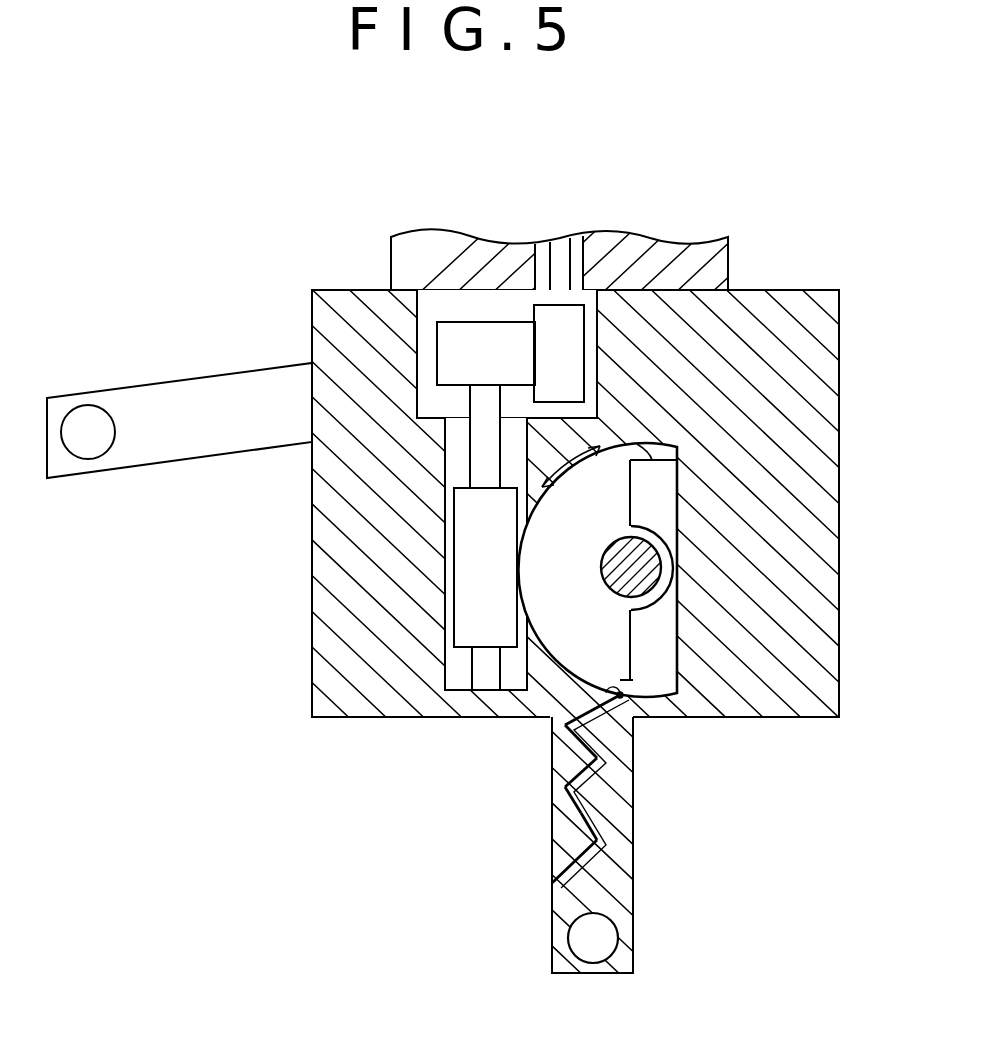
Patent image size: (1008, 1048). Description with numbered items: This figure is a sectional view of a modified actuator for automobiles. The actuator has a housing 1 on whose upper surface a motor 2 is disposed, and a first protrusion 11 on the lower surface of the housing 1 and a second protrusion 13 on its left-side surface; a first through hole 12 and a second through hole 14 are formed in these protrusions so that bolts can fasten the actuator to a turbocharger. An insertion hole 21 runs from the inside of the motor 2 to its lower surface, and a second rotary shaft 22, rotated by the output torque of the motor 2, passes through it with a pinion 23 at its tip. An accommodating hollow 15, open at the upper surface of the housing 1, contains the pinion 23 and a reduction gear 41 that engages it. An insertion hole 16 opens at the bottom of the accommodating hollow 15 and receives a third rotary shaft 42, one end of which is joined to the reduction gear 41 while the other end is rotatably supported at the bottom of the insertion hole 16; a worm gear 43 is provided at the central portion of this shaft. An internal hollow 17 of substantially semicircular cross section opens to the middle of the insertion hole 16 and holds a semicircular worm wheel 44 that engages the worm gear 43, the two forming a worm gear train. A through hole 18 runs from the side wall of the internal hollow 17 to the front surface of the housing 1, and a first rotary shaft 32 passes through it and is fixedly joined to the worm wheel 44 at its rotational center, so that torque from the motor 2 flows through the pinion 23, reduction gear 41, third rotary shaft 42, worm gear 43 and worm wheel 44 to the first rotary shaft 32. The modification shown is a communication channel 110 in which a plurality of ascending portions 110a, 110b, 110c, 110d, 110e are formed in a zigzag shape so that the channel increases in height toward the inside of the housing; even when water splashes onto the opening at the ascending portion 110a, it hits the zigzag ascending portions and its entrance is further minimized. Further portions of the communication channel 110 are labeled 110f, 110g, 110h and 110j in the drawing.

The housing 1 is at (312, 608).
The motor 2 is at (728, 270).
The first protrusion 11 is at (633, 880).
The first through hole 12 is at (616, 928).
The second protrusion 13 is at (226, 458).
The second through hole 14 is at (90, 448).
The accommodating hollow 15 is at (417, 400).
The insertion hole 16 is at (450, 430).
The internal hollow 17 is at (640, 444).
The through hole 18 is at (619, 543).
The insertion hole 21 is at (547, 250).
The second rotary shaft 22 is at (572, 249).
The pinion 23 is at (584, 348).
The first rotary shaft 32 is at (610, 582).
The reduction gear 41 is at (437, 340).
The third rotary shaft 42 is at (468, 488).
The worm gear 43 is at (454, 568).
The worm wheel 44 is at (630, 642).
The communication channel 110 is at (460, 736).
The ascending portion 110a is at (584, 866).
The ascending portion 110b is at (586, 840).
The ascending portion 110c is at (586, 806).
The ascending portion 110d is at (588, 782).
The ascending portion 110e is at (586, 750).
The base portion 110f is at (553, 890).
The inclined surface 110g is at (628, 705).
The lower end 110h is at (553, 880).
The contact portion 110j is at (623, 695).